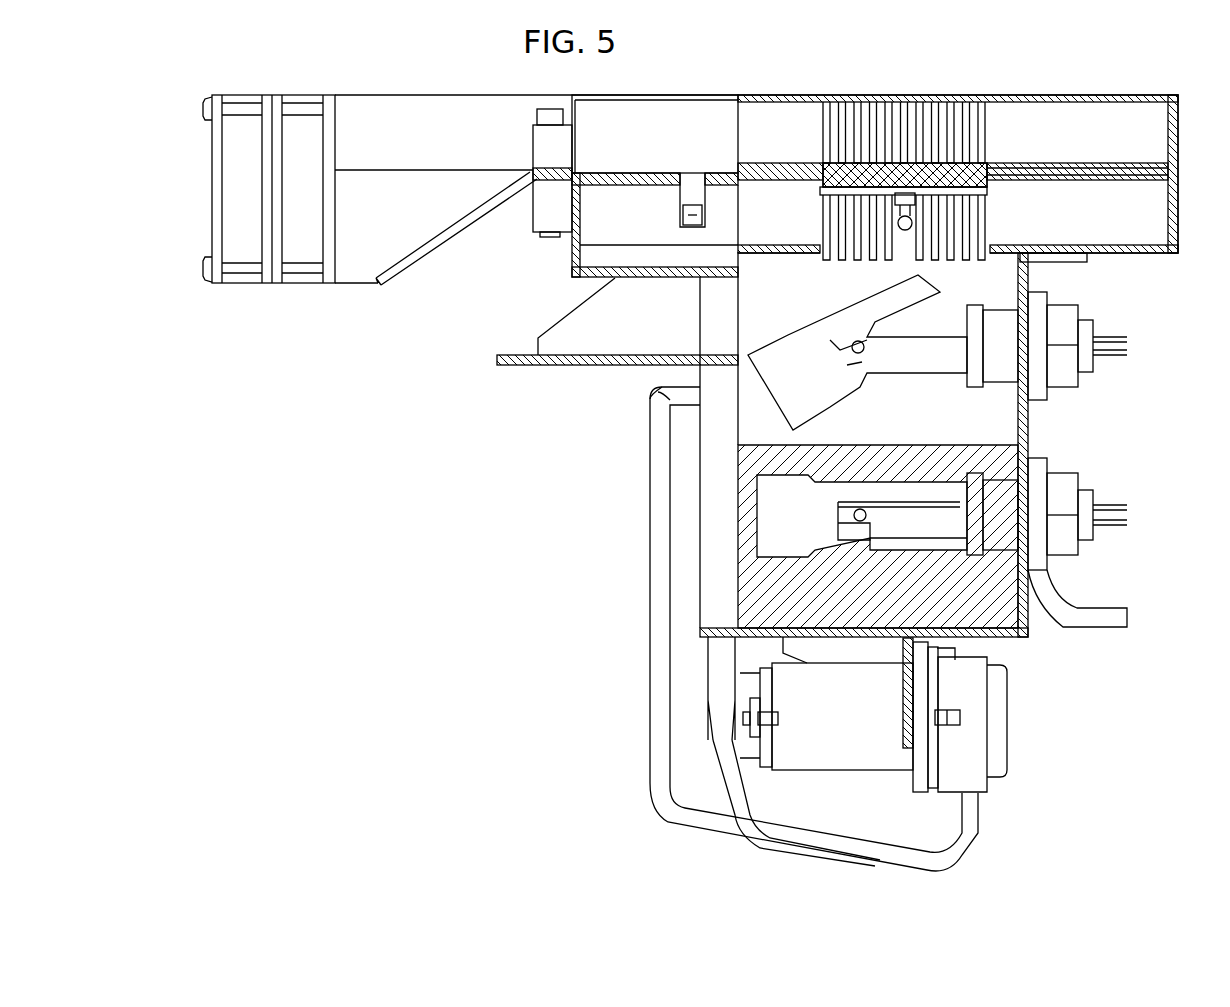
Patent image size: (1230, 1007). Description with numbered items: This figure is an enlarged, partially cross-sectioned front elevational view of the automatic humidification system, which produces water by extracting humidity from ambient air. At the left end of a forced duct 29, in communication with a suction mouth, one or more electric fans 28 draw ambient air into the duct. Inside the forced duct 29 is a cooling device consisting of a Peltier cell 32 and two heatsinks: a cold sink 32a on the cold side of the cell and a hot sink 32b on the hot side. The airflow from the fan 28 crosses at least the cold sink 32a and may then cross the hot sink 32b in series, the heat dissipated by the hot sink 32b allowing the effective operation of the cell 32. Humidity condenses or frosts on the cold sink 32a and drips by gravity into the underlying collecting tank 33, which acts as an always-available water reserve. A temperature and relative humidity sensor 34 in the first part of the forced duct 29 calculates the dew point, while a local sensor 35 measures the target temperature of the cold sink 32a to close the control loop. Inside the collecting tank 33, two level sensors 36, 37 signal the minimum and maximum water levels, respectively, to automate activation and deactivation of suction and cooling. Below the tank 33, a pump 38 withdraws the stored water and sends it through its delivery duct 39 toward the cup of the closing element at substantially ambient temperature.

The electric fan 28 is at (212, 170).
The forced duct 29 is at (782, 120).
The Peltier cell 32 is at (953, 159).
The cold sink 32a is at (970, 215).
The hot sink 32b is at (987, 130).
The collecting tank 33 is at (1030, 420).
The temperature and relative humidity sensor 34 is at (680, 215).
The local sensor 35 is at (870, 260).
The level sensor 36 is at (1067, 537).
The level sensor 37 is at (1063, 365).
The pump 38 is at (840, 757).
The delivery duct 39 is at (677, 812).